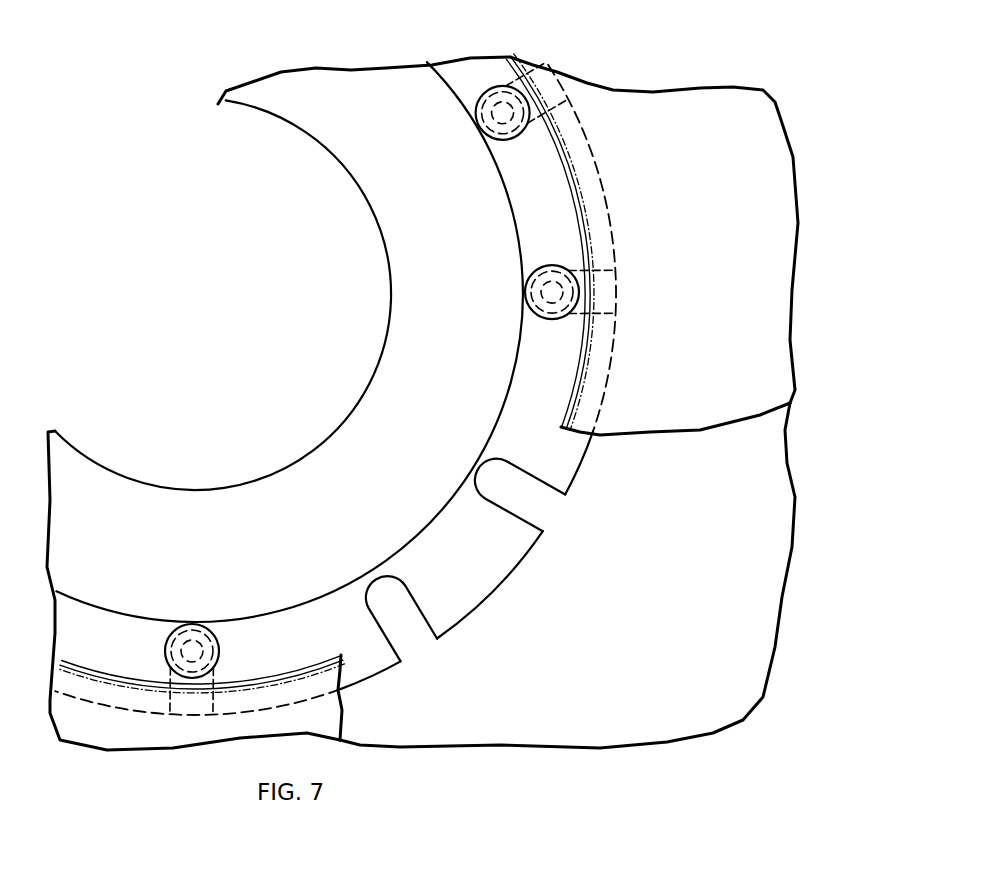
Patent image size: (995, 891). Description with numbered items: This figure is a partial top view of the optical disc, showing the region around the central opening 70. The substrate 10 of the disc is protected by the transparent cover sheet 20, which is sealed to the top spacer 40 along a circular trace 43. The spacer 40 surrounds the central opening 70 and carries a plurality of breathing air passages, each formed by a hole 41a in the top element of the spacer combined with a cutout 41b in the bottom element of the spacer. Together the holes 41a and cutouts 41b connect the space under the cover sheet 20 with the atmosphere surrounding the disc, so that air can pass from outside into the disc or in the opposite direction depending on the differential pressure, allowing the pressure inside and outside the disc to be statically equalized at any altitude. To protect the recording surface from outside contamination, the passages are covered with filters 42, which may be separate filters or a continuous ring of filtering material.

The substrate 10 is at (703, 650).
The cover sheet 20 is at (693, 110).
The top spacer 40 is at (587, 462).
The holes 41a is at (528, 312).
The cutouts 41b is at (610, 273).
The filters 42 is at (543, 271).
The circular trace 43 is at (574, 168).
The central opening 70 is at (232, 468).